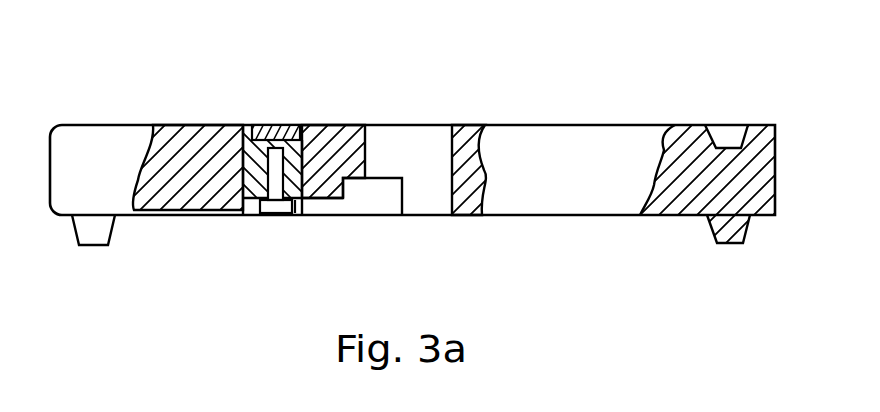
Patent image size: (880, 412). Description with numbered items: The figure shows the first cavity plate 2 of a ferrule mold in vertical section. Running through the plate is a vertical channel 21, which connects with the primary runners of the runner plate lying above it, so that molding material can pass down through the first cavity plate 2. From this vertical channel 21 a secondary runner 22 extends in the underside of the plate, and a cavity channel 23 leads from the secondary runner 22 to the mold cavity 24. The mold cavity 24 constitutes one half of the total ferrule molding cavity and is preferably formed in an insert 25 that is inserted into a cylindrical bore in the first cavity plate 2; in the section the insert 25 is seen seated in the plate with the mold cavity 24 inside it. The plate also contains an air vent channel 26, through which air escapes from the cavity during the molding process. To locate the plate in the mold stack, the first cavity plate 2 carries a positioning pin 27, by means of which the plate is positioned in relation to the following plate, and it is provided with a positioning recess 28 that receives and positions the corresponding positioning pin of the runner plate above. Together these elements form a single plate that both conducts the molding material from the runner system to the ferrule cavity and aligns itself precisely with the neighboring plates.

The first cavity plate 2 is at (572, 181).
The vertical channel 21 is at (409, 150).
The secondary runner 22 is at (375, 208).
The cavity channel 23 is at (317, 207).
The mold cavity 24 is at (246, 203).
The insert 25 is at (323, 125).
The air vent channel 26 is at (181, 207).
The positioning pin 27 is at (716, 242).
The positioning recess 28 is at (727, 137).